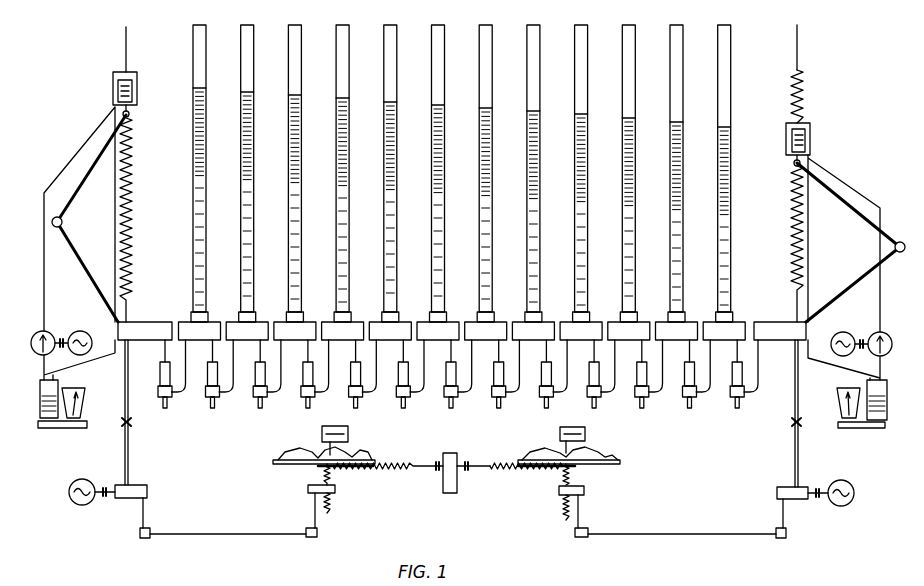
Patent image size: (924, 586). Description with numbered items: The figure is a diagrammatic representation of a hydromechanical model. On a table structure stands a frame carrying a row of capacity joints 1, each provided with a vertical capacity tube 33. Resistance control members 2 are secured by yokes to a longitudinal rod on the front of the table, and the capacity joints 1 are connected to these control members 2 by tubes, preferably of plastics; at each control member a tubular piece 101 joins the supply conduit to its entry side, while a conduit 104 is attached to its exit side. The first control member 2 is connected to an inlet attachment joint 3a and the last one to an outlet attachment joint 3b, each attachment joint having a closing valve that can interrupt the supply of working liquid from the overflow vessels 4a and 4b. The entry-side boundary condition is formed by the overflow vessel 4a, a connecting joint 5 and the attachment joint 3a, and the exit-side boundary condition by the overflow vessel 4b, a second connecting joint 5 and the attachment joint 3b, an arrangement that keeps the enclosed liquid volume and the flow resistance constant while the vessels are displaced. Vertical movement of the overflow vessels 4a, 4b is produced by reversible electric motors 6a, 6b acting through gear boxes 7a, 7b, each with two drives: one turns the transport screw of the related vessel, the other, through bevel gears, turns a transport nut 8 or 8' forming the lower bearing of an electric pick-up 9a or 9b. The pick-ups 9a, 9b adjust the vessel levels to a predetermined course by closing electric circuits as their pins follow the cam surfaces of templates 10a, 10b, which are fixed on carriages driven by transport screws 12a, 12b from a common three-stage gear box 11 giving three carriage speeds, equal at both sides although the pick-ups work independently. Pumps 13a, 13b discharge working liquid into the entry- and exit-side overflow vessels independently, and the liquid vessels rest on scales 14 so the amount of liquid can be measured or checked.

The capacity joint 1 is at (744, 288).
The resistance control member 2 is at (752, 423).
The inlet attachment joint 3a is at (133, 318).
The outlet attachment joint 3b is at (788, 320).
The overflow vessel 4a is at (137, 90).
The overflow vessel 4b is at (785, 140).
The connecting joint 5 is at (895, 248).
The electric motor 6a is at (68, 495).
The electric motor 6b is at (855, 497).
The gear box 7a is at (150, 492).
The gear box 7b is at (775, 488).
The transport nut 8 is at (329, 500).
The transport nut 8' is at (584, 500).
The electric pick-up 9a is at (350, 432).
The electric pick-up 9b is at (560, 432).
The template 10a is at (273, 460).
The template 10b is at (620, 460).
The three-stage gear box 11 is at (453, 493).
The transport screw 12a is at (388, 468).
The transport screw 12b is at (490, 468).
The pump 13a is at (61, 331).
The pump 13b is at (861, 333).
The scales 14 is at (852, 443).
The capacity tube 33 is at (740, 222).
The tubular piece 101 is at (213, 352).
The conduit 104 is at (216, 396).